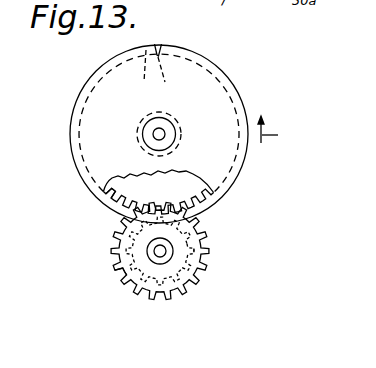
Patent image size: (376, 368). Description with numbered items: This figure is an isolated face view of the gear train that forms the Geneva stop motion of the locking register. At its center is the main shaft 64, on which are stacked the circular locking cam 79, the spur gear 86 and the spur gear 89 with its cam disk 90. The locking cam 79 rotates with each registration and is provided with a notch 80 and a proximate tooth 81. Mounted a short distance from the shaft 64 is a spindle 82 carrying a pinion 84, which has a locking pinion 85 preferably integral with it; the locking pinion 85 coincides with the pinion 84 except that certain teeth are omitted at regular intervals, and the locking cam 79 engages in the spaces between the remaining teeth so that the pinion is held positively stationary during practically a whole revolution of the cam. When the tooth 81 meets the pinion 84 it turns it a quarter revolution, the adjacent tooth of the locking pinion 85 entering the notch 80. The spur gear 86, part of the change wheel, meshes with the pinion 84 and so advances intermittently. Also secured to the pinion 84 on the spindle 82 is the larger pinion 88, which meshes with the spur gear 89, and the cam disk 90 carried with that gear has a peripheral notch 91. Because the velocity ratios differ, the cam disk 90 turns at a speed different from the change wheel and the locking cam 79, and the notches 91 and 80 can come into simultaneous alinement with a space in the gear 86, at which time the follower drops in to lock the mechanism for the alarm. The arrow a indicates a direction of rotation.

The main shaft 64 is at (155, 133).
The circular locking cam 79 is at (118, 220).
The notch 80 is at (161, 50).
The tooth 81 is at (114, 55).
The spindle 82 is at (162, 251).
The pinion 84 is at (205, 276).
The locking pinion 85 is at (203, 235).
The spur gear 86 is at (115, 204).
The pinion 88 is at (123, 273).
The spur gear 89 is at (138, 187).
The cam disk 90 is at (88, 144).
The notch 91 is at (157, 47).
The direction of rotation a is at (275, 131).